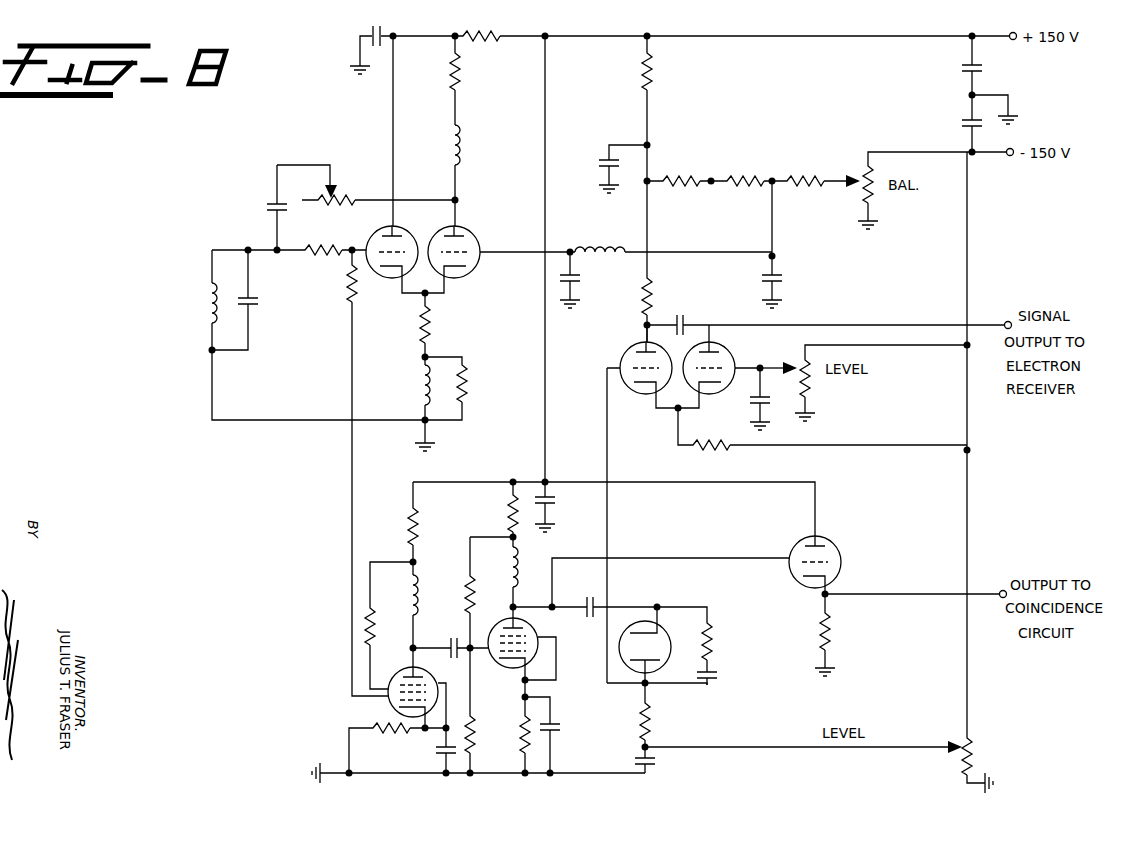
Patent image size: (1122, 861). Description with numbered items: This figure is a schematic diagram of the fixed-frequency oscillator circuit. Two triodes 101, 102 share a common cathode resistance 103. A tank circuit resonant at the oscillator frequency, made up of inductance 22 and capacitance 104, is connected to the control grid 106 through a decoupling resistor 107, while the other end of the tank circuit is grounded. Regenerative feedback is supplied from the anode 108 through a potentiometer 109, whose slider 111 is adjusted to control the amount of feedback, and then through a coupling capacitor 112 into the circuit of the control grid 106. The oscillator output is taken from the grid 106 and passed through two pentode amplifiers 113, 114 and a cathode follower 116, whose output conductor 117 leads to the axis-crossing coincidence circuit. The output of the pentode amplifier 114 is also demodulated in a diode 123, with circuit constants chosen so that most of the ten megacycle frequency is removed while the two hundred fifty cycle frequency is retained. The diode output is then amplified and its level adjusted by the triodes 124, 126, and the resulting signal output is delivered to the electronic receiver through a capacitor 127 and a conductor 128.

The inductance 22 is at (208, 292).
The triode 101 is at (400, 230).
The triode 102 is at (480, 250).
The common cathode resistance 103 is at (430, 318).
The capacitance 104 is at (255, 305).
The control grid 106 is at (366, 247).
The decoupling resistor 107 is at (327, 265).
The anode 108 is at (465, 232).
The potentiometer 109 is at (378, 212).
The slider 111 is at (335, 170).
The coupling capacitor 112 is at (270, 200).
The pentode amplifier 113 is at (405, 667).
The pentode amplifier 114 is at (537, 630).
The cathode follower 116 is at (840, 555).
The output conductor 117 is at (977, 598).
The diode 123 is at (665, 637).
The triode 124 is at (637, 345).
The triode 126 is at (715, 350).
The capacitor 127 is at (683, 320).
The conductor 128 is at (994, 323).